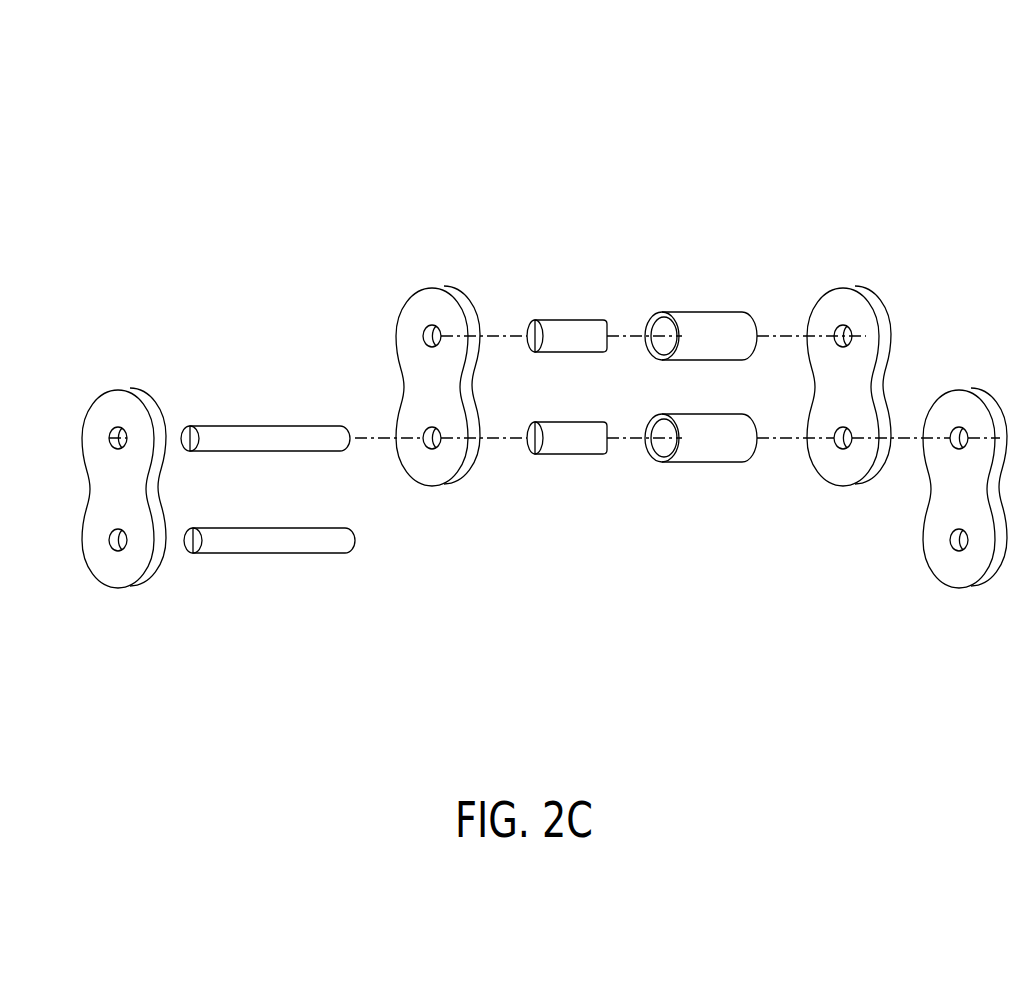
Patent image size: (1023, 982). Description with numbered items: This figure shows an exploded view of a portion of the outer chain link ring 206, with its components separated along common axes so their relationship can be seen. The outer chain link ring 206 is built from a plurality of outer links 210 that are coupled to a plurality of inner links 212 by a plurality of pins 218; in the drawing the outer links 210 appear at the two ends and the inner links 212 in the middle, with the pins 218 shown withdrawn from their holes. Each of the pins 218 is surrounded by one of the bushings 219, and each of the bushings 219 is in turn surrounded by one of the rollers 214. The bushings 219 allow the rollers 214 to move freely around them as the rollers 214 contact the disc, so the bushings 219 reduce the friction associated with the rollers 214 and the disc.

The outer chain link ring 206 is at (268, 166).
The outer links 210 is at (119, 391).
The inner links 212 is at (817, 297).
The rollers 214 is at (709, 312).
The pins 218 is at (340, 452).
The bushings 219 is at (556, 320).